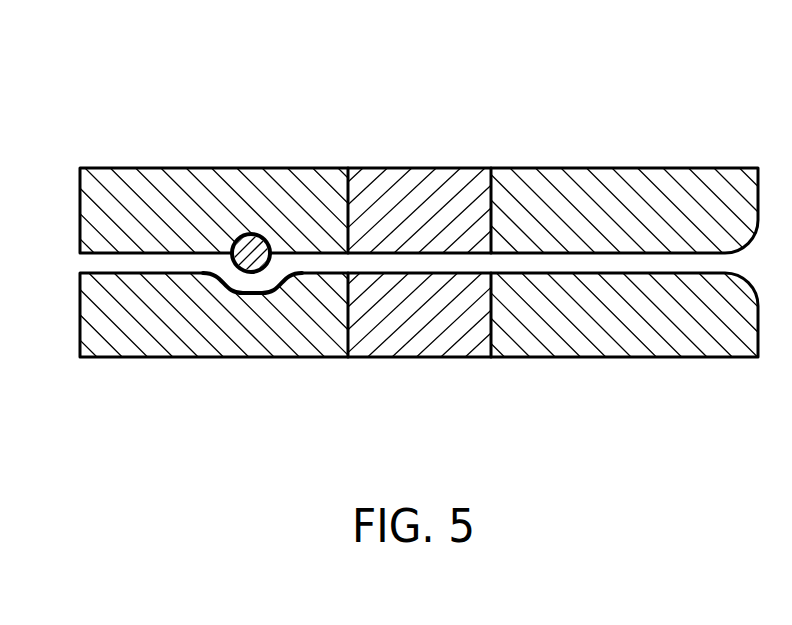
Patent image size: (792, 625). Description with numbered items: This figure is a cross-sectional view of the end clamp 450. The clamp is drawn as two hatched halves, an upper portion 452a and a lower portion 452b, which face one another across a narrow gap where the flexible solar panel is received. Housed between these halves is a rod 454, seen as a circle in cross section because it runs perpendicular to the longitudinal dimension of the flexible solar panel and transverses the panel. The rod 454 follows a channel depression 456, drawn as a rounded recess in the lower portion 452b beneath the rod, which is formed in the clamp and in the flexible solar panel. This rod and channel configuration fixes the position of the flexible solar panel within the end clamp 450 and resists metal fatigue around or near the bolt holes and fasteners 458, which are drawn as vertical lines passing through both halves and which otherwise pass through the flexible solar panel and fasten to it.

The end clamp 450 is at (424, 235).
The upper plate 452a is at (190, 168).
The lower plate 452b is at (178, 357).
The rod 454 is at (252, 233).
The channel depression 456 is at (252, 293).
The fasteners 458 is at (348, 317).